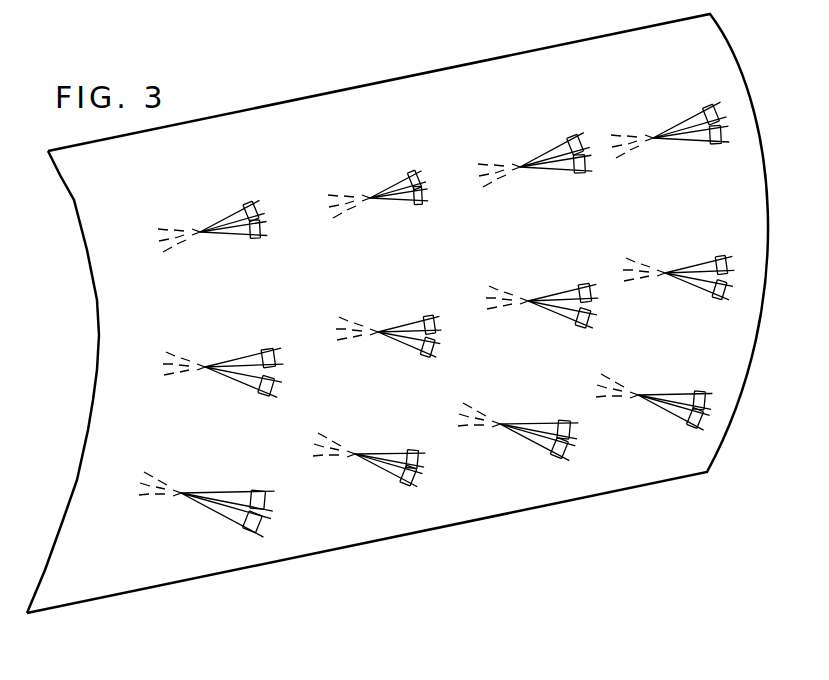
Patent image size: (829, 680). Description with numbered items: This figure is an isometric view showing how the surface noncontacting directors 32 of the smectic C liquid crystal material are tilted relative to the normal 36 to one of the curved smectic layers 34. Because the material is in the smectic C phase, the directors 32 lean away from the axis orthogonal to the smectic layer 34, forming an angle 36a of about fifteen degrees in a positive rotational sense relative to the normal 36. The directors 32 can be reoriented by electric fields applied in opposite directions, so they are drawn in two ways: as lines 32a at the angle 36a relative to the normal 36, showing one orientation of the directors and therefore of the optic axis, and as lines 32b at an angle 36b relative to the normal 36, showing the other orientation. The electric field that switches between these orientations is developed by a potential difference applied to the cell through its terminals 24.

The terminal 24 is at (221, 0).
The surface noncontacting directors 32 is at (700, 65).
The lines representing one director orientation 32a is at (457, 296).
The lines representing the other director orientation 32b is at (455, 341).
The curved smectic layer 34 is at (50, 555).
The normal 36 is at (449, 319).
The angle of first director orientation 36a is at (501, 295).
The angle of second director orientation 36b is at (501, 341).